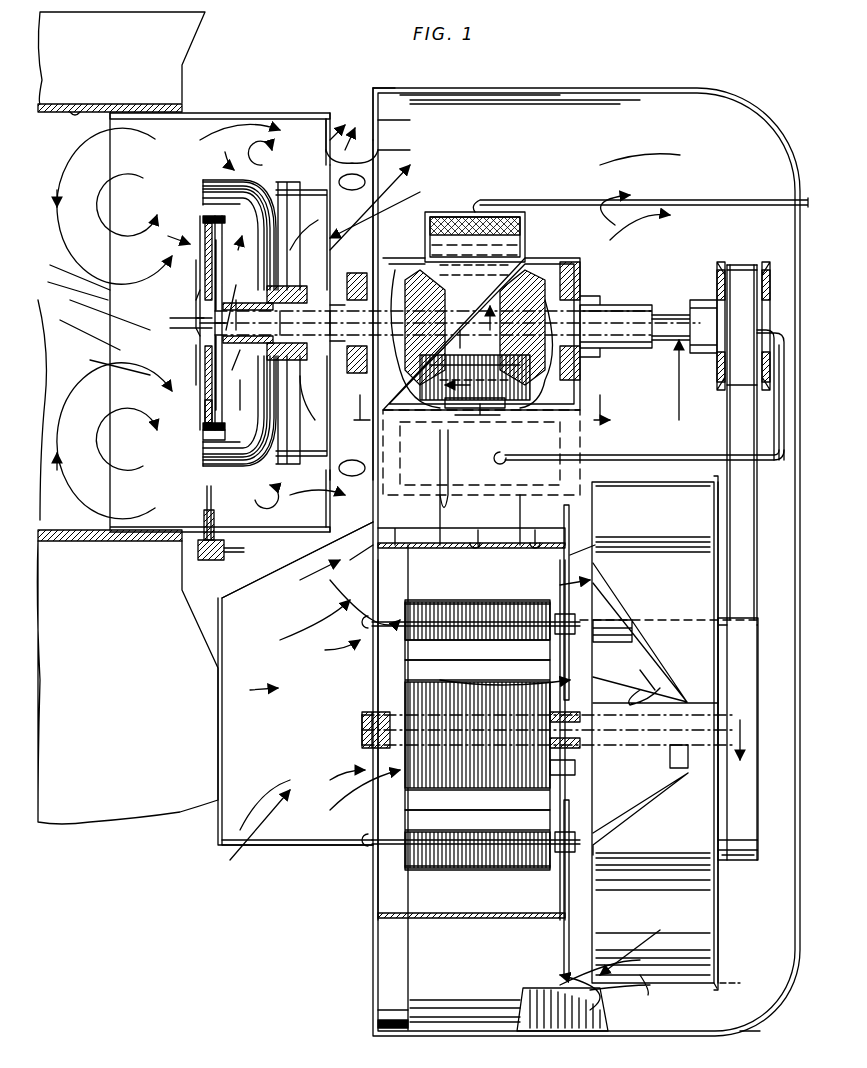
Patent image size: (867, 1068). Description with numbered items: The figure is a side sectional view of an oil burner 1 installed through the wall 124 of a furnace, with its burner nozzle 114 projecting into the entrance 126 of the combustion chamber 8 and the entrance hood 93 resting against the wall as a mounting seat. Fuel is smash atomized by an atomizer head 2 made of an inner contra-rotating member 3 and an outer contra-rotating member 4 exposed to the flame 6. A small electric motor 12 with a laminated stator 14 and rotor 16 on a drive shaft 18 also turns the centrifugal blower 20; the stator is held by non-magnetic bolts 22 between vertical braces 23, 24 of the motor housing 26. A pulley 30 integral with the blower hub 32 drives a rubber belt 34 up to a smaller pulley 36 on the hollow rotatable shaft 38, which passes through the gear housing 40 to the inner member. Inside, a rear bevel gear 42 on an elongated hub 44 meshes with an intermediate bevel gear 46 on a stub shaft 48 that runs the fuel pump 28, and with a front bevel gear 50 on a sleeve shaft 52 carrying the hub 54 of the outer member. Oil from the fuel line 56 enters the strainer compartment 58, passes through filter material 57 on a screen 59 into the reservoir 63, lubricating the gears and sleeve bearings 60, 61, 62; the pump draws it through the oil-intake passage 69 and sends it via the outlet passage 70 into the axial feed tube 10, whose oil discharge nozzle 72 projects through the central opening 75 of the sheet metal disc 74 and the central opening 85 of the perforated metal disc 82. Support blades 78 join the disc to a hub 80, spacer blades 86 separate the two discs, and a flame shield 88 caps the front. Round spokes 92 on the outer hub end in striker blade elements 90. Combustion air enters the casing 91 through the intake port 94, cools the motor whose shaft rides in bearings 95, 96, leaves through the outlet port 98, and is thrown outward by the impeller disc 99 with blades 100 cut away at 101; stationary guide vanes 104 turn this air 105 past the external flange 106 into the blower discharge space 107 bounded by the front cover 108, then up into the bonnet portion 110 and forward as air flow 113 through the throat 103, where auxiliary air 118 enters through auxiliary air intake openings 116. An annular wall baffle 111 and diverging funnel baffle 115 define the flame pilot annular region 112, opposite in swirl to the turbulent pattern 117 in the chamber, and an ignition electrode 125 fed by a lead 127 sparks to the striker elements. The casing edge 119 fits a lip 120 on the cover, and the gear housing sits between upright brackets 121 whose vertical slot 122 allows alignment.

The oil burner 1 is at (733, 75).
The atomizer head 2 is at (160, 168).
The inner contra-rotating member 3 is at (172, 234).
The outer contra-rotating member 4 is at (416, 282).
The flame 6 is at (62, 370).
The combustion chamber 8 is at (76, 302).
The axial feed tube 10 is at (800, 302).
The electric motor 12 is at (486, 862).
The laminated stator 14 is at (440, 860).
The rotor 16 is at (410, 694).
The drive shaft 18 is at (588, 740).
The centrifugal blower 20 is at (722, 906).
The non-magnetic bolts 22 is at (572, 624).
The vertical brace 23 is at (370, 860).
The vertical brace 24 is at (578, 876).
The motor housing 26 is at (452, 918).
The fuel pump 28 is at (435, 500).
The pulley 30 is at (750, 838).
The hub 32 is at (676, 762).
The rubber belt 34 is at (758, 560).
The smaller pulley 36 is at (768, 262).
The rotatable shaft 38 is at (322, 345).
The gear housing 40 is at (576, 272).
The rear bevel gear 42 is at (542, 272).
The elongated hub 44 is at (636, 346).
The intermediate bevel gear 46 is at (475, 362).
The stub shaft 48 is at (490, 408).
The front bevel gear 50 is at (438, 280).
The sleeve shaft 52 is at (310, 286).
The hub 54 is at (286, 278).
The fuel line 56 is at (672, 200).
The filter material 57 is at (430, 222).
The strainer compartment 58 is at (528, 232).
The screen 59 is at (432, 245).
The sleeve bearing 60 is at (594, 298).
The sleeve bearing 61 is at (440, 408).
The sleeve bearing 62 is at (366, 272).
The reservoir 63 is at (457, 325).
The oil-intake passage 69 is at (438, 455).
The outlet passage 70 is at (540, 440).
The oil discharge nozzle 72 is at (200, 336).
The sheet metal disc 74 is at (202, 432).
The central opening 75 is at (200, 326).
The support blades 78 is at (200, 214).
The hub 80 is at (232, 323).
The perforated metal disc 82 is at (204, 406).
The central opening 85 is at (196, 318).
The spacer blades 86 is at (204, 254).
The flame shield 88 is at (196, 300).
The striker blade elements 90 is at (206, 178).
The casing 91 is at (482, 1036).
The round spokes 92 is at (259, 324).
The entrance hood 93 is at (240, 845).
The intake port 94 is at (306, 688).
The bearing 95 is at (362, 718).
The bearing 96 is at (578, 765).
The outlet port 98 is at (566, 560).
The impeller disc 99 is at (716, 992).
The blades 100 is at (645, 488).
The cut-away 101 is at (640, 680).
The throat 103 is at (390, 148).
The stationary guide vanes 104 is at (722, 1033).
The air 105 is at (640, 998).
The external flange 106 is at (566, 512).
The blower discharge space 107 is at (478, 984).
The front cover 108 is at (390, 120).
The bonnet portion 110 is at (600, 92).
The annular wall baffle 111 is at (325, 168).
The annular region 112 is at (272, 118).
The air flow 113 is at (424, 192).
The burner nozzle 114 is at (216, 114).
The diverging funnel baffle 115 is at (362, 192).
The auxiliary air intake openings 116 is at (336, 125).
The turbulent pattern 117 is at (126, 238).
The auxiliary air 118 is at (360, 78).
The edge 119 is at (404, 1034).
The lip 120 is at (455, 92).
The upright brackets 121 is at (520, 530).
The vertical slot 122 is at (476, 508).
The wall 124 is at (158, 56).
The ignition electrode 125 is at (206, 498).
The entrance 126 is at (74, 110).
The lead 127 is at (234, 562).